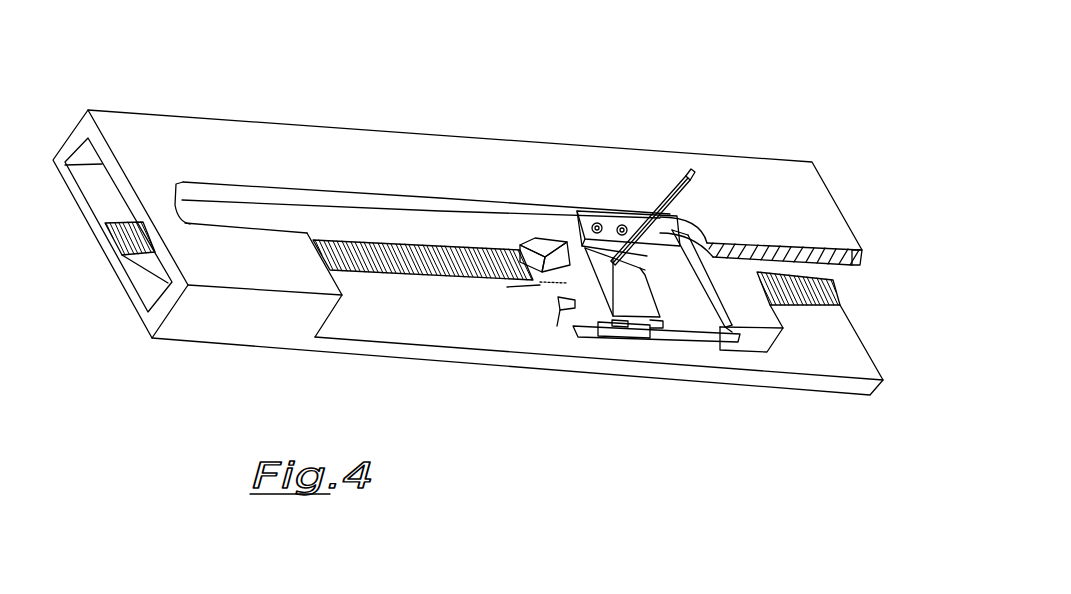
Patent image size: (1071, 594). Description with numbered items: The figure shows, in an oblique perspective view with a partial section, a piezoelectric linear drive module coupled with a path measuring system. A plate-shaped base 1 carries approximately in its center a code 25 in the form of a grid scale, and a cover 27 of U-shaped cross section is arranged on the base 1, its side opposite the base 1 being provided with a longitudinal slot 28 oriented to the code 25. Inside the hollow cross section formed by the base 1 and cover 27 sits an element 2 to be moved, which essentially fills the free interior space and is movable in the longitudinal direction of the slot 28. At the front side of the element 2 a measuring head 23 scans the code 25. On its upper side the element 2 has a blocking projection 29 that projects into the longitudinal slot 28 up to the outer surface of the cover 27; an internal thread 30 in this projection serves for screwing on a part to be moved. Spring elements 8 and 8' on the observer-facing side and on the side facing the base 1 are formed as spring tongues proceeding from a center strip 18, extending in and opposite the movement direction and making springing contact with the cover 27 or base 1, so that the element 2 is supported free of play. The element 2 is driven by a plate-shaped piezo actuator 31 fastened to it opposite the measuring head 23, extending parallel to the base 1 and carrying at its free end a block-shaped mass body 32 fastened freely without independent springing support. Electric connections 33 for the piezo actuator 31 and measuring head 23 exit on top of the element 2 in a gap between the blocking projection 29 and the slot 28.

The base 1 is at (152, 280).
The element to be moved 2 is at (637, 297).
The spring elements 8 is at (633, 371).
The spring elements 8' is at (531, 317).
The center strip 18 is at (618, 347).
The measuring head 23 is at (510, 280).
The code 25 is at (440, 280).
The cover 27 is at (335, 165).
The longitudinal slot 28 is at (207, 203).
The blocking projection 29 is at (600, 223).
The internal thread 30 is at (592, 222).
The piezo actuator 31 is at (713, 340).
The mass body 32 is at (737, 282).
The electric connections 33 is at (665, 210).